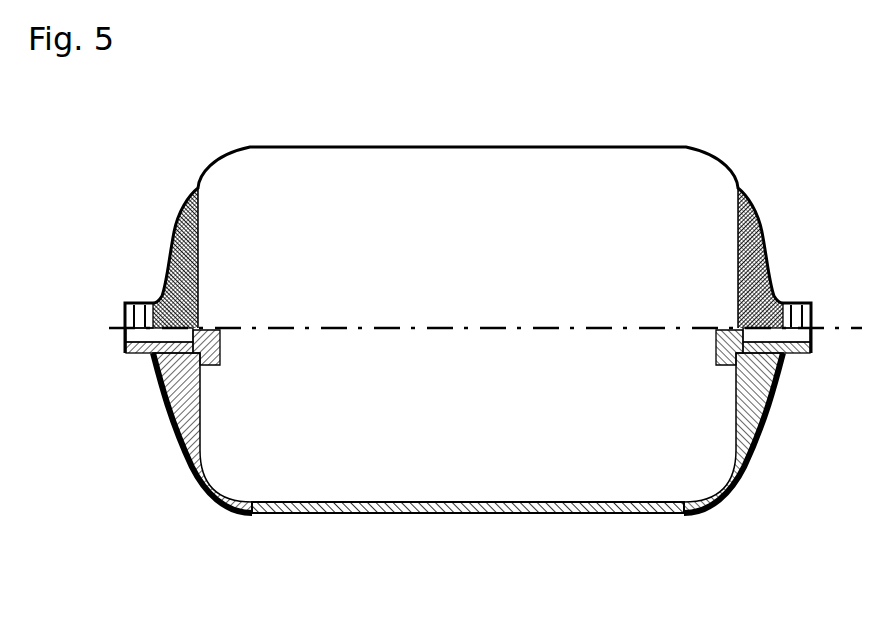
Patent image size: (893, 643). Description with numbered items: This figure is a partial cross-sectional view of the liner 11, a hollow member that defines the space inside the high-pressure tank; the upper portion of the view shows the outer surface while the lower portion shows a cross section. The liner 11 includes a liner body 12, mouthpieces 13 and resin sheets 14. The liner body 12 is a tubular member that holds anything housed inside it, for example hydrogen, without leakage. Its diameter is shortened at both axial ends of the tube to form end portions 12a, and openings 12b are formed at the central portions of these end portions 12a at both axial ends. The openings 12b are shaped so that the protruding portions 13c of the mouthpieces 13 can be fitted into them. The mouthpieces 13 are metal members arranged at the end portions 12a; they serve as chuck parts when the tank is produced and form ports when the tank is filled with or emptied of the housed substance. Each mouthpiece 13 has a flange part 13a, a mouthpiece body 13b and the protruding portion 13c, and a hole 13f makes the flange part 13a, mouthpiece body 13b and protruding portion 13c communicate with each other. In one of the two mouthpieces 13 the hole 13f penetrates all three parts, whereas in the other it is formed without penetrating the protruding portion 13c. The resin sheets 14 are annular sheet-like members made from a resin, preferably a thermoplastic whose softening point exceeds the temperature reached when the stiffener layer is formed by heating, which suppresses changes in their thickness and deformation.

The liner 11 is at (758, 128).
The liner body 12 is at (641, 120).
The end portions 12a is at (218, 402).
The openings 12b is at (228, 360).
The mouthpieces 13 is at (128, 315).
The flange part 13a is at (168, 398).
The mouthpiece body 13b is at (127, 352).
The protruding portion 13c is at (233, 343).
The hole 13f is at (128, 338).
The resin sheets 14 is at (178, 243).